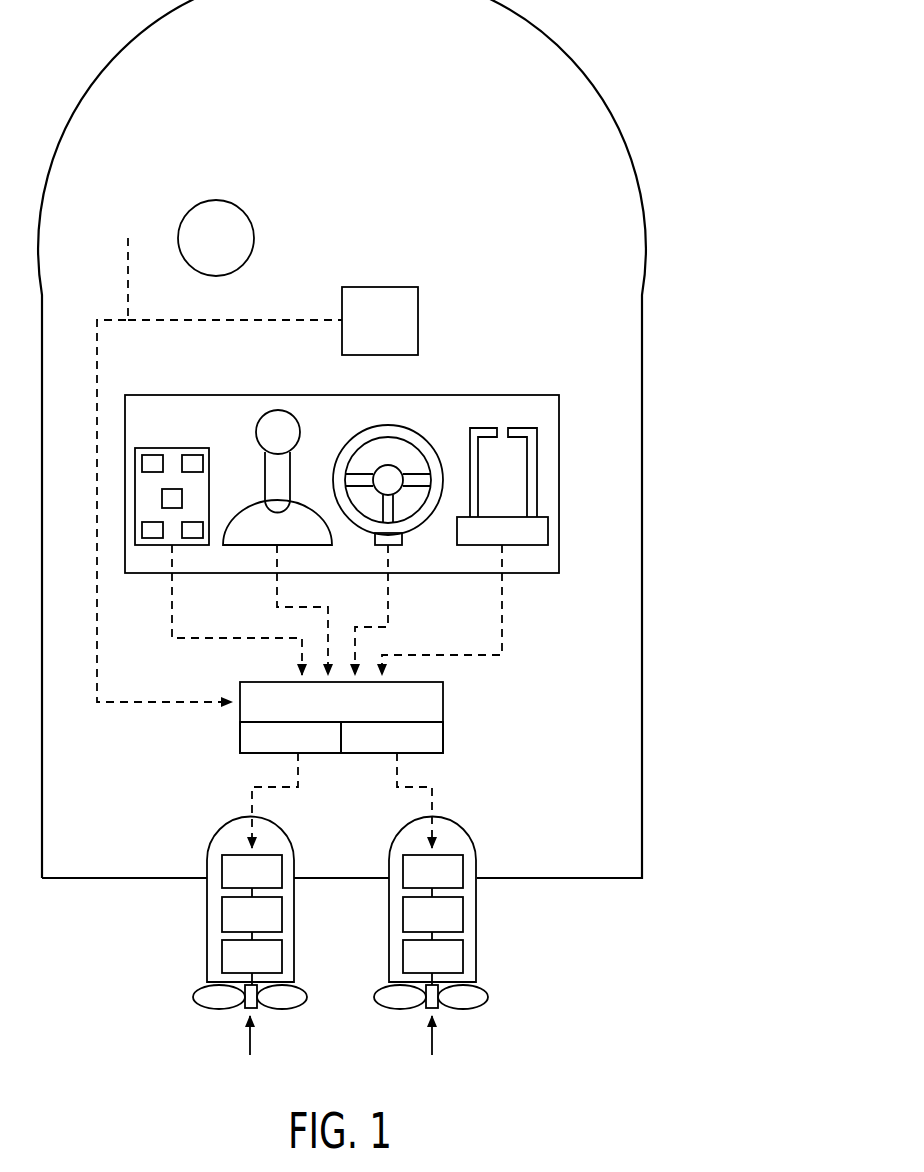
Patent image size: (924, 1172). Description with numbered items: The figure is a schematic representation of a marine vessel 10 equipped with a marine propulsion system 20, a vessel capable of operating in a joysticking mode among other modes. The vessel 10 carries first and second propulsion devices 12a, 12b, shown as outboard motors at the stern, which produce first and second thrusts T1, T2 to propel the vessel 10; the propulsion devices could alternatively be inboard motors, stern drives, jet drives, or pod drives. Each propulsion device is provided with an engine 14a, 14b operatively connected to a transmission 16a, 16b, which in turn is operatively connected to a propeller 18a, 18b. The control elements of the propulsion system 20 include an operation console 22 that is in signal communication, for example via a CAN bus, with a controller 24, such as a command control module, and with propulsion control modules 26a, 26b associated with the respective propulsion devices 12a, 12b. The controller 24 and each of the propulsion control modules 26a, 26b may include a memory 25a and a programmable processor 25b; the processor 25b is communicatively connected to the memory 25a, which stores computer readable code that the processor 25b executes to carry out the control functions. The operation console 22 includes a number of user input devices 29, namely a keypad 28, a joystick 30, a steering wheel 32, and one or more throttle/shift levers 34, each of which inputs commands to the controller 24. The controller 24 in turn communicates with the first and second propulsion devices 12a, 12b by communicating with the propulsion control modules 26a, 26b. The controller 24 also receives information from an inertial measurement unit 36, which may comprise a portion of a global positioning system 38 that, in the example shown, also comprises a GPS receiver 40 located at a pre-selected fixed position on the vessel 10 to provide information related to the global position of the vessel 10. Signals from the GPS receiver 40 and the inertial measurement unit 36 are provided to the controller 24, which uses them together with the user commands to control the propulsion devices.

The marine vessel 10 is at (626, 147).
The marine propulsion system 20 is at (523, 76).
The first propulsion device 12a is at (233, 823).
The second propulsion device 12b is at (452, 823).
The engine 14a is at (222, 915).
The engine 14b is at (463, 915).
The transmission 16a is at (222, 957).
The transmission 16b is at (463, 957).
The propeller 18a is at (194, 1003).
The propeller 18b is at (480, 1005).
The operation console 22 is at (502, 395).
The controller 24 is at (443, 707).
The memory 25a is at (240, 742).
The programmable processor 25b is at (443, 742).
The propulsion control module 26a is at (232, 855).
The propulsion control module 26b is at (453, 855).
The keypad 28 is at (152, 448).
The user input device 29 is at (237, 450).
The joystick 30 is at (290, 477).
The steering wheel 32 is at (388, 425).
The throttle/shift lever 34 is at (483, 428).
The inertial measurement unit 36 is at (380, 287).
The global positioning system 38 is at (307, 270).
The GPS receiver 40 is at (193, 208).
The first thrust T1 is at (253, 1040).
The second thrust T2 is at (435, 1040).